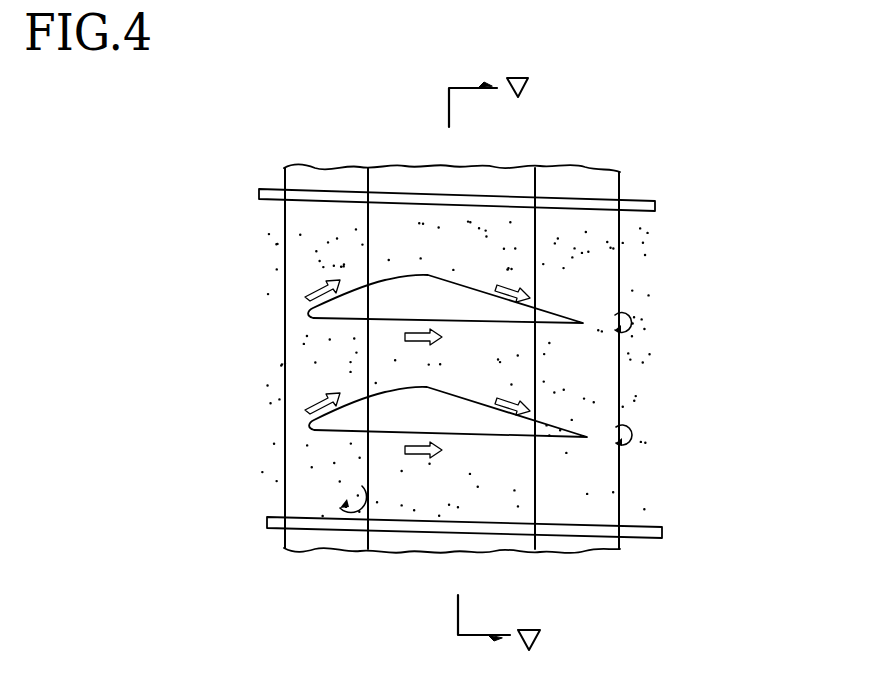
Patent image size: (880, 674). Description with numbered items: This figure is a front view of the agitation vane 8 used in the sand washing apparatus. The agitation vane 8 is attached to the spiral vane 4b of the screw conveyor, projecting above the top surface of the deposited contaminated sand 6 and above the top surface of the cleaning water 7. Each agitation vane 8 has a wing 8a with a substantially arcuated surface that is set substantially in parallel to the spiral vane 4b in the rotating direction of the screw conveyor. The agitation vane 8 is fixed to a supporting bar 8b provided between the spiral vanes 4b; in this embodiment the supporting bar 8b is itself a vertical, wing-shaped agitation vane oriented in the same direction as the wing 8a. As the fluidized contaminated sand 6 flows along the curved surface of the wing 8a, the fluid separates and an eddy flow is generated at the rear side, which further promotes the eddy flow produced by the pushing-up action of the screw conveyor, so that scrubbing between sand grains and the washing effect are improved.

The spiral vane 4b is at (587, 201).
The contaminated sand 6 is at (298, 377).
The cleaning water 7 is at (286, 290).
The agitation vane 8 is at (565, 303).
The wing 8a is at (470, 394).
The supporting bar 8b is at (536, 488).